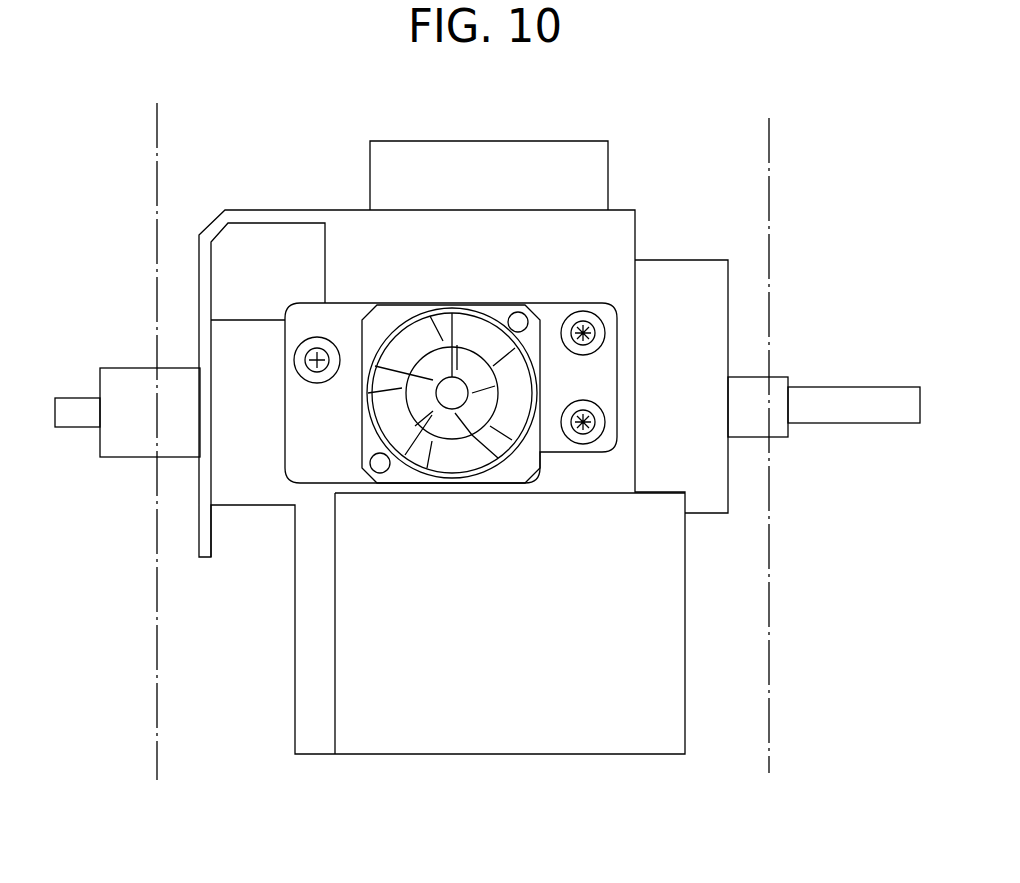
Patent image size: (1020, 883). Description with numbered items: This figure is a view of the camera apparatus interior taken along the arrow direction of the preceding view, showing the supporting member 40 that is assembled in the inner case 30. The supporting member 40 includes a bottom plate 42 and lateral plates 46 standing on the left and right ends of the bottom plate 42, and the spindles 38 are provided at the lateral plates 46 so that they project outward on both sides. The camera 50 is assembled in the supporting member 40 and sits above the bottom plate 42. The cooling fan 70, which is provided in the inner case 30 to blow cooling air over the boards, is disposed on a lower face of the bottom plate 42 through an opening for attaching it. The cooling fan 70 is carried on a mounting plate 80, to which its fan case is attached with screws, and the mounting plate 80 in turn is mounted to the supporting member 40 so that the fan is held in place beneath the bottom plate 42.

The inner case 30 is at (157, 748).
The spindles 38 is at (72, 398).
The supporting member 40 is at (302, 206).
The bottom plate 42 is at (623, 232).
The lateral plates 46 is at (200, 468).
The camera 50 is at (608, 158).
The cooling fan 70 is at (504, 298).
The mounting plate 80 is at (303, 468).